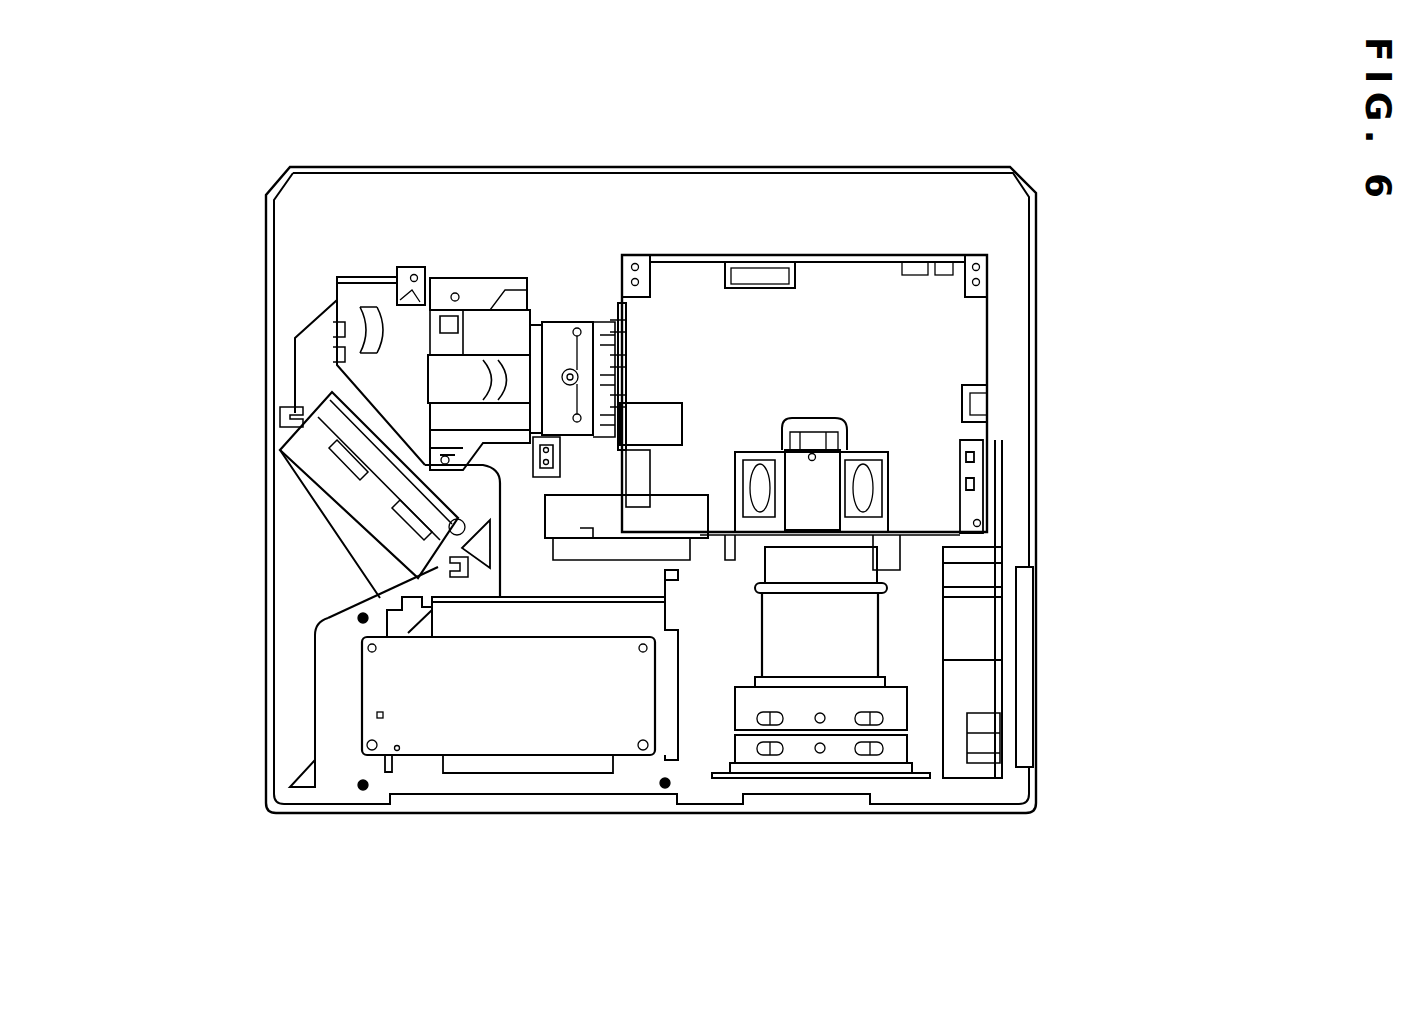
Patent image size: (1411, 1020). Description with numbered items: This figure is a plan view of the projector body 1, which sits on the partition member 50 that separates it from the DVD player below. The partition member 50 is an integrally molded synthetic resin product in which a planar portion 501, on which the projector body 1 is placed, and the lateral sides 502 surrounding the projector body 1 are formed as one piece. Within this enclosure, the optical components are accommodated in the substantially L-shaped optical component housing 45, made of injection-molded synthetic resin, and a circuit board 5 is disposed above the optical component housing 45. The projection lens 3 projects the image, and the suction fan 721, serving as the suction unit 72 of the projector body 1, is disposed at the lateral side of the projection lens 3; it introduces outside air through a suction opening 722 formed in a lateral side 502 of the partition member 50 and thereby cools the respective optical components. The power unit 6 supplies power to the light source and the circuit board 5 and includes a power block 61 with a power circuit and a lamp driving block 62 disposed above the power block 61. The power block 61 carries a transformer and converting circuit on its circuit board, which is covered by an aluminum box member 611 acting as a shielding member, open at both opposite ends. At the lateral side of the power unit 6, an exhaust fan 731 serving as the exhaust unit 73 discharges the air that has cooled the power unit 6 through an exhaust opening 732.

The projector body 1 is at (990, 211).
The projection lens 3 is at (862, 620).
The circuit board 5 is at (950, 352).
The power unit 6 is at (518, 744).
The optical component housing 45 is at (510, 290).
The partition member 50 is at (1020, 233).
The power block 61 is at (518, 719).
The box member 611 is at (470, 768).
The lamp driving block 62 is at (527, 740).
The suction unit 72 is at (1060, 609).
The suction fan 721 is at (988, 703).
The suction opening 722 is at (1028, 669).
The exhaust unit 73 is at (285, 589).
The exhaust fan 731 is at (307, 518).
The exhaust opening 732 is at (278, 627).
The planar portion 501 is at (876, 186).
The lateral side 502 is at (412, 167).